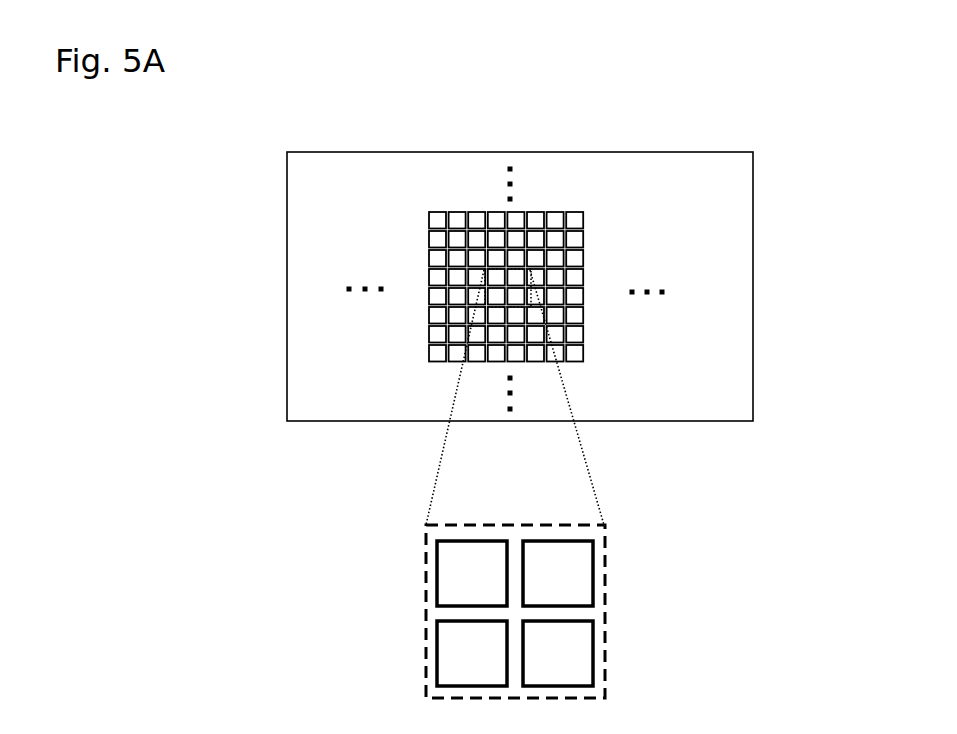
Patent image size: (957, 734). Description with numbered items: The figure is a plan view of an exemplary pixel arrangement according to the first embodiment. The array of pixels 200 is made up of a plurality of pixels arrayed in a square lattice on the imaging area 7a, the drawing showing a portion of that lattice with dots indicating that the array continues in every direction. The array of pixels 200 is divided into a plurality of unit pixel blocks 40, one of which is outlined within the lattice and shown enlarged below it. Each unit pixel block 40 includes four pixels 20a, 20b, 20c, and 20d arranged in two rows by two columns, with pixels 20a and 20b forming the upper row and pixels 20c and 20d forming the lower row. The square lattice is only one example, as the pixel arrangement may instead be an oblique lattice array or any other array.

The imaging area 7a is at (753, 240).
The array of pixels 200 is at (586, 239).
The unit pixel block 40 is at (606, 553).
The pixel 20a is at (437, 571).
The pixel 20b is at (595, 577).
The pixel 20c is at (437, 641).
The pixel 20d is at (595, 643).